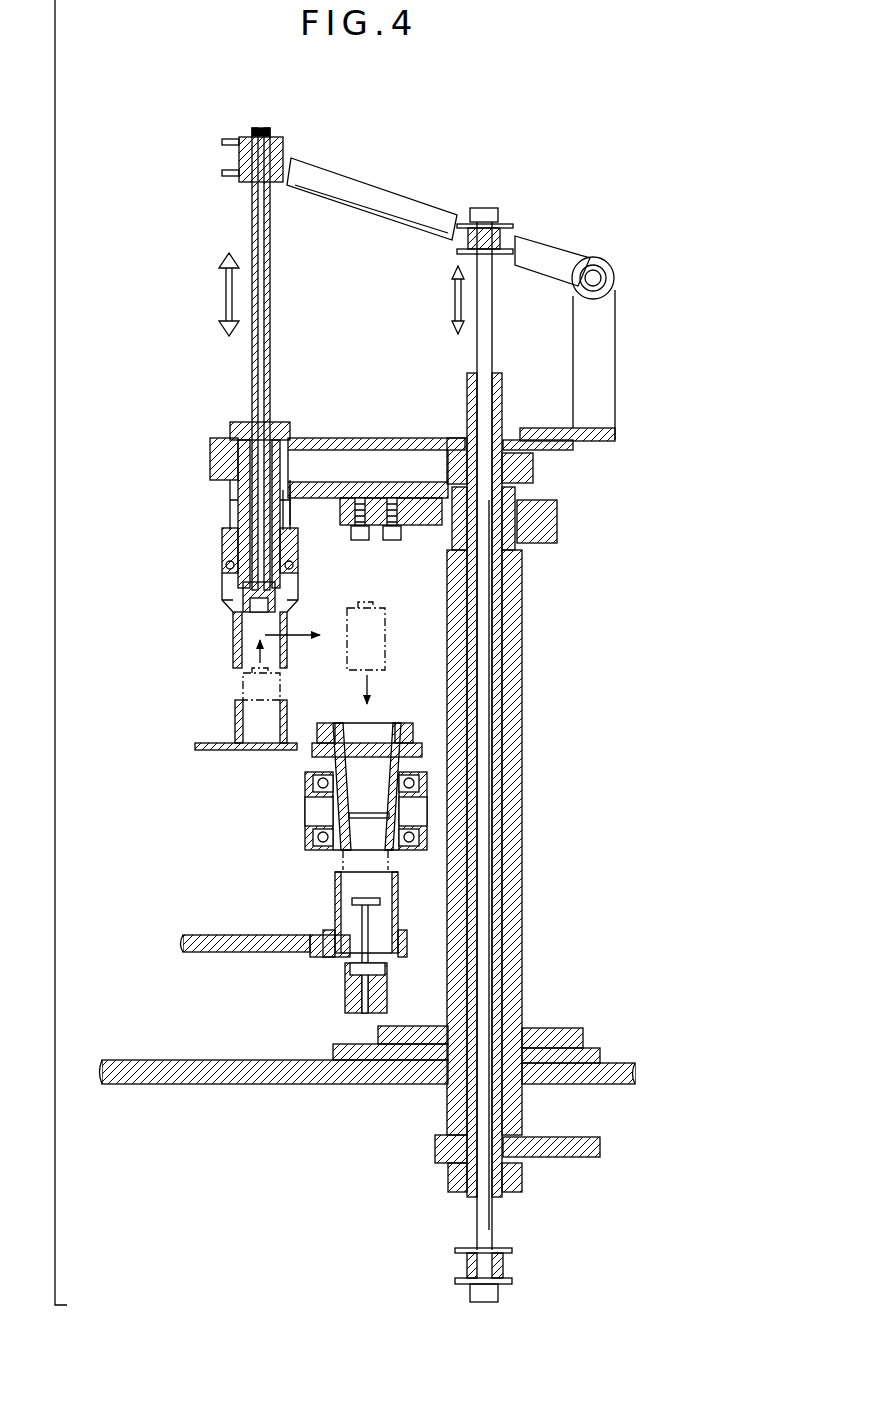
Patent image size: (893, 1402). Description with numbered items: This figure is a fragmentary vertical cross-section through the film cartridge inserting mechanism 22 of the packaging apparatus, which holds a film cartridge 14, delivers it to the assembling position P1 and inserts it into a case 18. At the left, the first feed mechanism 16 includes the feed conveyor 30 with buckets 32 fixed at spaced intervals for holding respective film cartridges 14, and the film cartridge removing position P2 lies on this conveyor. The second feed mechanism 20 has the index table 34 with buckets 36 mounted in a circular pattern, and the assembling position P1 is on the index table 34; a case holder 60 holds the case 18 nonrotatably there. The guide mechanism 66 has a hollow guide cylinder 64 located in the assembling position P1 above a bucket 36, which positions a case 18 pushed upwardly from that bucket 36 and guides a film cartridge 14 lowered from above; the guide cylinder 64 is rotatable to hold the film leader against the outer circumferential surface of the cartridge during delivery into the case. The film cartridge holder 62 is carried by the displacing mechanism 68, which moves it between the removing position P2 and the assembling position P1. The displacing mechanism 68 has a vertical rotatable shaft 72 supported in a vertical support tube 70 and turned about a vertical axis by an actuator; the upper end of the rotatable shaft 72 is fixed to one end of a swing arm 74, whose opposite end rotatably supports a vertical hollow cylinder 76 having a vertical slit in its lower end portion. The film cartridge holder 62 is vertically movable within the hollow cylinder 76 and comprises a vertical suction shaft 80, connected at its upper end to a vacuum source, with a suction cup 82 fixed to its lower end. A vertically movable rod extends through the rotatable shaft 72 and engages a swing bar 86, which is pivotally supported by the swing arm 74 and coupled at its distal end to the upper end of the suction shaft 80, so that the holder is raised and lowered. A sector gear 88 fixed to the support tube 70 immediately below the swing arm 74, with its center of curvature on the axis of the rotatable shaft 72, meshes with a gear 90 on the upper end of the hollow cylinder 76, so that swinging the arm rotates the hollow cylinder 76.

The film cartridge inserting mechanism 22 is at (120, 209).
The vertical suction shaft 80 is at (272, 263).
The swing bar 86 is at (553, 262).
The swing arm 74 is at (388, 437).
The displacing mechanism 68 is at (552, 478).
The gear 90 is at (235, 510).
The film cartridge holder 62 is at (221, 566).
The sector gear 88 is at (292, 508).
The suction cup 82 is at (275, 595).
The vertical hollow cylinder 76 is at (233, 632).
The film cartridge 14 is at (248, 693).
The bucket 32 is at (235, 720).
The first feed mechanism 16 is at (212, 752).
The feed conveyor 30 is at (275, 752).
The film cartridge removing position P2 is at (248, 760).
The assembling position P1 is at (300, 855).
The guide mechanism 66 is at (395, 676).
The guide cylinder 64 is at (404, 722).
The rotatable shaft 72 is at (500, 716).
The support tube 70 is at (520, 887).
The case 18 is at (372, 862).
The bucket 36 is at (398, 908).
The second feed mechanism 20 is at (240, 954).
The index table 34 is at (335, 955).
The case holder 60 is at (390, 972).